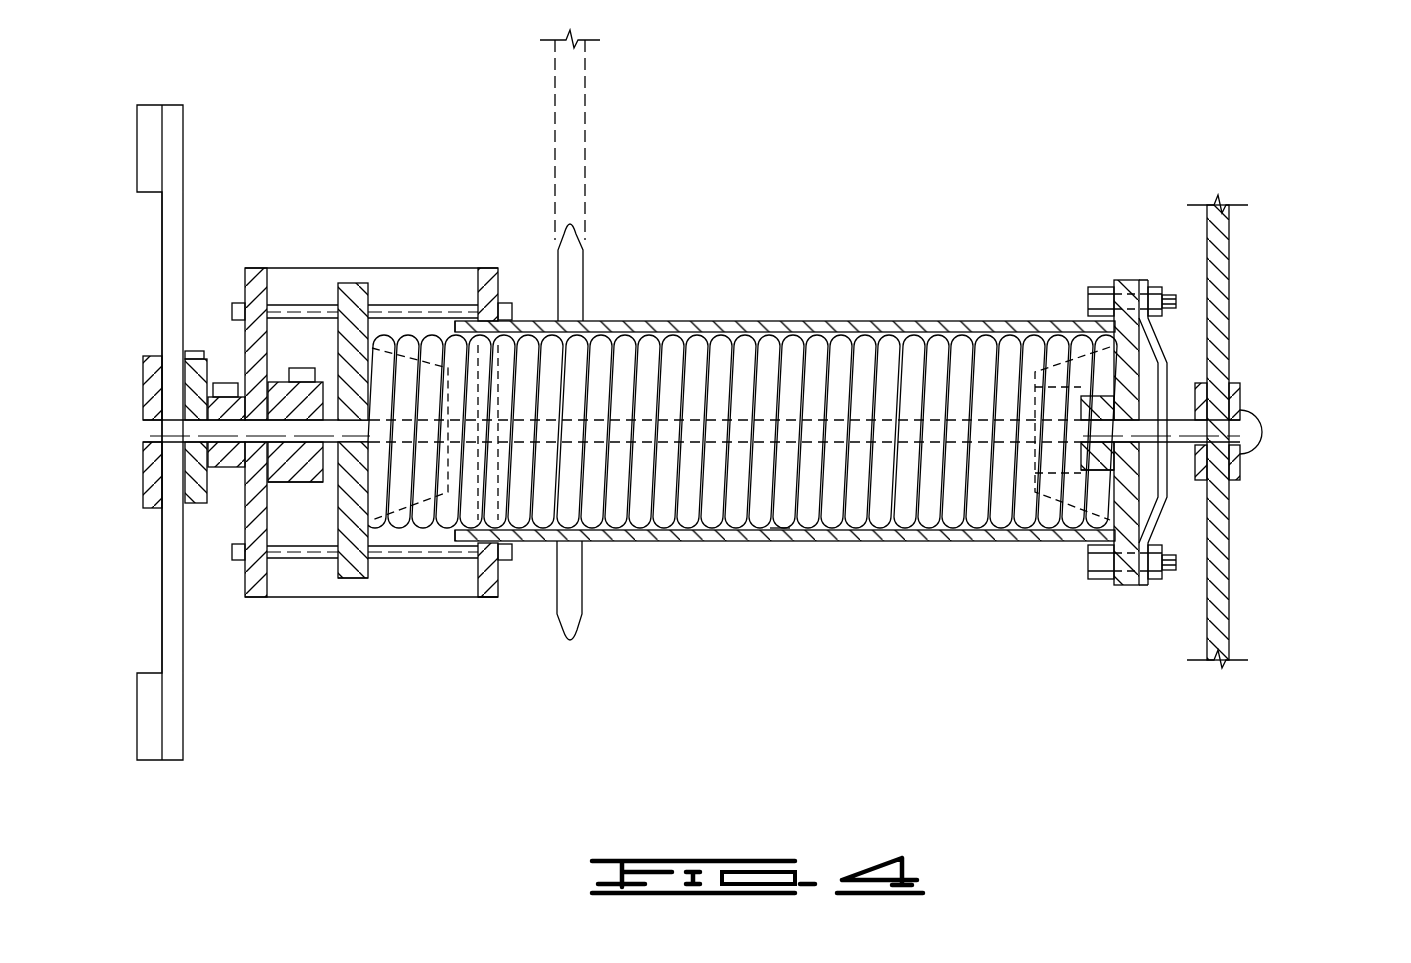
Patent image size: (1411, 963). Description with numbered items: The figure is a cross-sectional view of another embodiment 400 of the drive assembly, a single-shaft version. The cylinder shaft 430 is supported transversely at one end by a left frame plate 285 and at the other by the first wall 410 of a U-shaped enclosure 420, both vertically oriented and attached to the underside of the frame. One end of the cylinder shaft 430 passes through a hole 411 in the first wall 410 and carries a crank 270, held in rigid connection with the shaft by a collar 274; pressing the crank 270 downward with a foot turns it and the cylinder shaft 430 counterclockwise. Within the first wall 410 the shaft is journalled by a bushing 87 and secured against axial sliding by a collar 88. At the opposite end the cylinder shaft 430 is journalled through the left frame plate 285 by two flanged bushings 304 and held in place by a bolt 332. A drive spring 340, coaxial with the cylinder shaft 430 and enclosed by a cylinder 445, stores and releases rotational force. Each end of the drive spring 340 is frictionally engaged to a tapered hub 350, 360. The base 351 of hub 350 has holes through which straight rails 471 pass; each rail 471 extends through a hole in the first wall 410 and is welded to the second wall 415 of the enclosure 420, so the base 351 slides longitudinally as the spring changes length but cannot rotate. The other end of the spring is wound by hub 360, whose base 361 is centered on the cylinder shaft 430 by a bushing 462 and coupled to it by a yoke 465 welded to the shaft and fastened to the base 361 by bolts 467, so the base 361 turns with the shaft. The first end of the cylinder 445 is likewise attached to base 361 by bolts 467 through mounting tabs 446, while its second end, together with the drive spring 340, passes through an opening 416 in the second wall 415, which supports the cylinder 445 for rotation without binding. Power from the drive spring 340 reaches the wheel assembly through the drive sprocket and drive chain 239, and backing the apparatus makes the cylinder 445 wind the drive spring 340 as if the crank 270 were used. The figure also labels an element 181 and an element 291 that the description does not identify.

The crank 270 is at (240, 92).
The drive assembly embodiment 400 is at (1275, 95).
The first wall 410 is at (243, 285).
The straight rails 471 is at (307, 307).
The tapered hub 350 is at (400, 365).
The base 351 is at (355, 575).
The housing 181 is at (417, 268).
The opening 416 is at (490, 327).
The drive chain 239 is at (585, 137).
The pin 291 is at (583, 275).
The cylinder 445 is at (678, 322).
The drive spring 340 is at (783, 347).
The tapered hub 360 is at (1067, 317).
The base 361 is at (1127, 280).
The mounting tabs 446 is at (1100, 290).
The bolts 467 is at (1160, 283).
The yoke 465 is at (1163, 347).
The flanged bushings 304 is at (1240, 385).
The bolt 332 is at (1262, 435).
The left frame plate 285 is at (1232, 565).
The bushing 462 is at (1100, 470).
The cylinder shaft 430 is at (778, 540).
The second wall 415 is at (498, 597).
The U-shaped enclosure 420 is at (397, 665).
The hole 411 is at (225, 465).
The collar 87 is at (245, 507).
The collar end 88 is at (305, 482).
The collar 274 is at (143, 395).